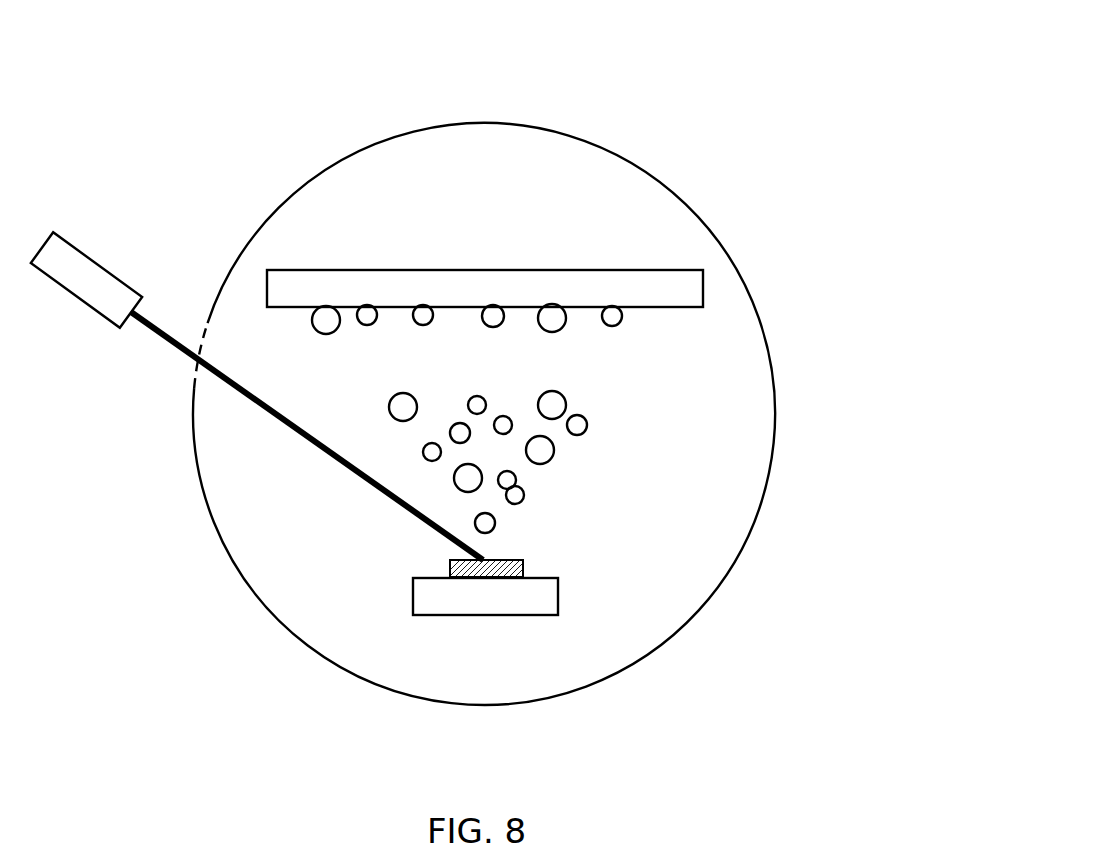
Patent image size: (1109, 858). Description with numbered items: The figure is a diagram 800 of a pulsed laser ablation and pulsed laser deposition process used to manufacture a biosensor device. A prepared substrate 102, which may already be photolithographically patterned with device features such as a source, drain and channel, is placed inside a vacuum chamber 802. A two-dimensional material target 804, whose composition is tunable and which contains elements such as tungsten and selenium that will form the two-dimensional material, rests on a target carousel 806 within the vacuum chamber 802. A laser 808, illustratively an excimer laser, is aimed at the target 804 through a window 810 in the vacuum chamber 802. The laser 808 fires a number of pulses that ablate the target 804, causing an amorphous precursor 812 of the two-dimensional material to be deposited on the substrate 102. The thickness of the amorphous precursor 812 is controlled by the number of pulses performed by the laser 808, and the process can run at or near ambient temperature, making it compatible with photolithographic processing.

The diagram 800 is at (904, 102).
The vacuum chamber 802 is at (615, 152).
The window 810 is at (193, 325).
The laser 808 is at (90, 280).
The substrate 102 is at (587, 295).
The amorphous precursor 812 is at (631, 338).
The two-dimensional material target 804 is at (463, 569).
The target carousel 806 is at (547, 600).